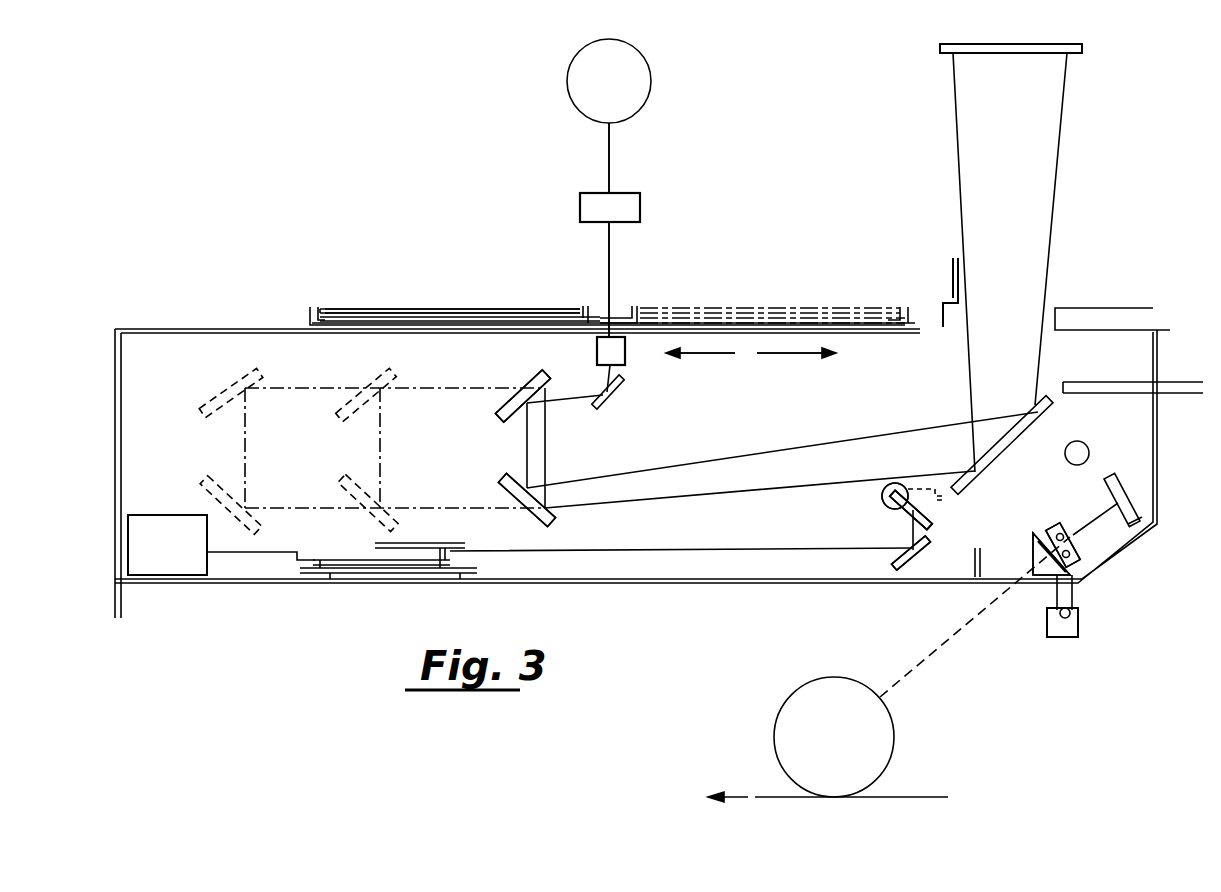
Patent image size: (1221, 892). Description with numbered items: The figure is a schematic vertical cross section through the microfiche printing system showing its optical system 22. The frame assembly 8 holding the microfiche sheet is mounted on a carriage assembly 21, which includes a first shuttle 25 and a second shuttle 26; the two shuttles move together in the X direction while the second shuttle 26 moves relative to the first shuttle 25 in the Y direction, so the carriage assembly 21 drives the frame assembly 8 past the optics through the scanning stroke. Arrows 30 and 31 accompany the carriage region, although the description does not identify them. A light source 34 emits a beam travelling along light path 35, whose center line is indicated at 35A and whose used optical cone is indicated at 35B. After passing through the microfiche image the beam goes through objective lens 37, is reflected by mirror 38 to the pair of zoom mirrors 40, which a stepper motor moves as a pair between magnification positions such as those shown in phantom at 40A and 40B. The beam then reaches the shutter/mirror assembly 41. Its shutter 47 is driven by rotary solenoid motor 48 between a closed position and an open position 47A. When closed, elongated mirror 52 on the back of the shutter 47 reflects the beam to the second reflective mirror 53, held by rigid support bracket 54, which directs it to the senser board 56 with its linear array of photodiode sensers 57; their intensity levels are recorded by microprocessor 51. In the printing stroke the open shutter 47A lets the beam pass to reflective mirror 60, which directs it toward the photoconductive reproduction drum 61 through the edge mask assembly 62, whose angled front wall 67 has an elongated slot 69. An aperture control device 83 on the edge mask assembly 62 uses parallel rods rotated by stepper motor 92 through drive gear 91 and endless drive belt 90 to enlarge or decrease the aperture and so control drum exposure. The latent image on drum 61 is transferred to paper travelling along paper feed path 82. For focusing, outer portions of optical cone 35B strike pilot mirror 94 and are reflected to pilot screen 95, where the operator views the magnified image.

The light source 34 is at (640, 78).
The light path 35 is at (624, 155).
The optical system 22 is at (580, 259).
The carriage assembly 21 is at (352, 299).
The frame assembly 8 is at (418, 306).
The first shuttle 25 is at (310, 317).
The second shuttle 26 is at (632, 305).
The objective lens 37 is at (626, 357).
The mirror 38 is at (603, 401).
The center line of the light beam optics 35A is at (573, 387).
The used portion of the optical cone 35B is at (527, 433).
The zoom mirrors 40 is at (507, 478).
The zoom mirror magnification position 40A is at (343, 482).
The zoom mirror magnification position 40B is at (218, 480).
The direction of movement 31 is at (708, 354).
The direction of movement 30 is at (796, 354).
The shutter/mirror assembly 41 is at (866, 495).
The rotary solenoid motor 48 is at (886, 490).
The shutter 47 is at (913, 485).
The open position of shutter 47A is at (928, 486).
The elongated mirror 52 is at (895, 510).
The second reflective mirror 53 is at (895, 558).
The rigid support bracket 54 is at (922, 553).
The pilot mirror 94 is at (1044, 418).
The pilot screen 95 is at (950, 44).
The aperture control device 83 is at (1070, 522).
The reflective mirror 60 is at (1140, 520).
The angled front wall 67 is at (1047, 535).
The edge mask assembly 62 is at (1084, 543).
The elongated slot 69 is at (1056, 565).
The endless drive belt 90 is at (1075, 593).
The drive gear 91 is at (1071, 614).
The stepper motor 92 is at (1062, 637).
The photoconductive reproduction drum 61 is at (790, 708).
The paper feed path 82 is at (910, 795).
The microprocessor 51 is at (178, 565).
The senser board 56 is at (364, 578).
The photodiode sensers 57 is at (447, 553).